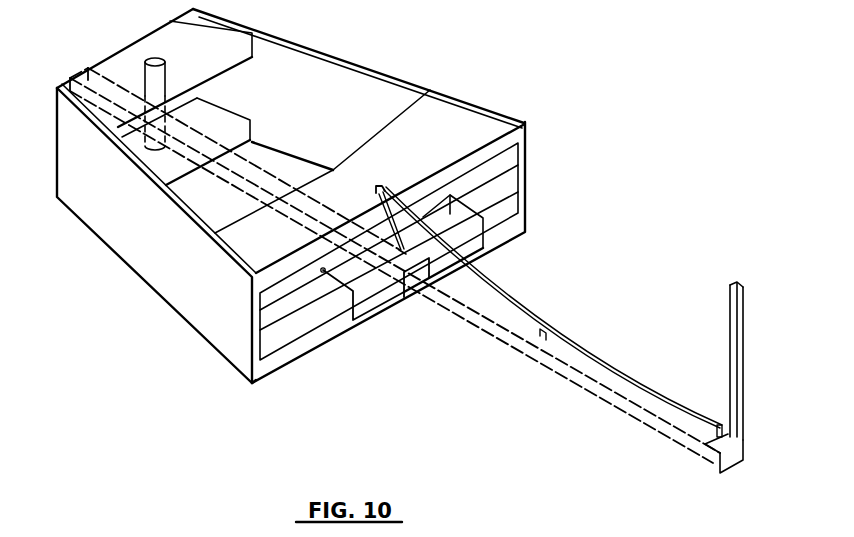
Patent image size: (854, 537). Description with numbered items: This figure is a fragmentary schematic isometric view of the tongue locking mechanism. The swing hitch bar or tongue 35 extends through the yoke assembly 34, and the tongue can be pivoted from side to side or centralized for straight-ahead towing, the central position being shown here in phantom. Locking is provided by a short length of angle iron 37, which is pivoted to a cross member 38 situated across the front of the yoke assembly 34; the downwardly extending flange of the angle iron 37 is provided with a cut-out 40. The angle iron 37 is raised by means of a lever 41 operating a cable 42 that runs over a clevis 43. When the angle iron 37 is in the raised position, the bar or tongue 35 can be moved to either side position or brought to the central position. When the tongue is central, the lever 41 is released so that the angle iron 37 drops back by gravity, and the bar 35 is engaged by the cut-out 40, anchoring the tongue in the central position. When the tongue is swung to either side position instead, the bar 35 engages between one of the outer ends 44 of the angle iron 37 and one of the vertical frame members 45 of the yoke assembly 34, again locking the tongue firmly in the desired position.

The yoke assembly 34 is at (365, 85).
The swing hitch bar or tongue 35 is at (580, 395).
The angle iron 37 is at (372, 307).
The cross member 38 is at (507, 180).
The cut-out 40 is at (417, 283).
The lever 41 is at (730, 365).
The cable 42 is at (567, 343).
The clevis 43 is at (383, 186).
The outer ends of the angle iron 44 is at (487, 247).
The vertical frame members 45 is at (252, 342).